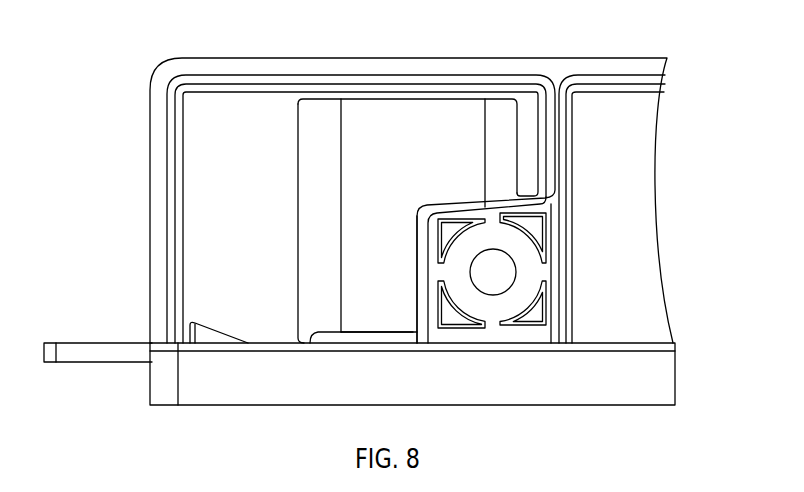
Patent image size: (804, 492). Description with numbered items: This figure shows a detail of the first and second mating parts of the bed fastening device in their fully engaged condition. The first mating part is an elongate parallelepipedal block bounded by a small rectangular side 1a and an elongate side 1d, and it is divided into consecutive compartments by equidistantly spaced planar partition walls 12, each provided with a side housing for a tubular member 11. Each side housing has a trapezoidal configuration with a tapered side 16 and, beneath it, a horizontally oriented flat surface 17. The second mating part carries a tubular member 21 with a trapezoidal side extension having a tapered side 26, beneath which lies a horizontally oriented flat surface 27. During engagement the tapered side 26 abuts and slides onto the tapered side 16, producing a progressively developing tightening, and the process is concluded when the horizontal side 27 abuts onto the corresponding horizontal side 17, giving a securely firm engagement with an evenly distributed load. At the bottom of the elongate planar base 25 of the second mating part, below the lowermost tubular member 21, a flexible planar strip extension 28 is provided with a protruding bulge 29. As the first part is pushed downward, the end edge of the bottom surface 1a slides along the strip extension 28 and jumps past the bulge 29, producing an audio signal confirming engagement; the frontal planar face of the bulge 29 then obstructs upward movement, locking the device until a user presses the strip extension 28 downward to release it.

The small rectangular side 1a is at (158, 153).
The elongate side 1d is at (382, 72).
The tubular member 11 is at (511, 296).
The planar partition wall 12 is at (572, 145).
The tapered side 16 is at (388, 178).
The tapered side 26 is at (470, 203).
The flat surface 17 is at (391, 326).
The flat surface 27 is at (416, 306).
The tubular member 21 is at (353, 303).
The elongate planar base 25 is at (202, 375).
The flexible planar strip extension 28 is at (92, 350).
The protruding bulge 29 is at (220, 328).